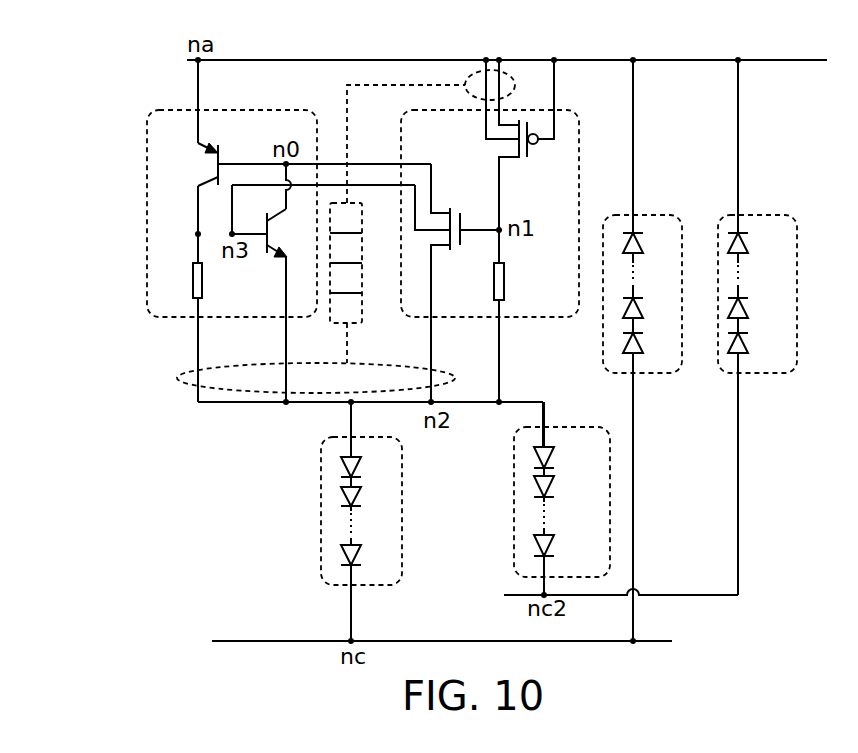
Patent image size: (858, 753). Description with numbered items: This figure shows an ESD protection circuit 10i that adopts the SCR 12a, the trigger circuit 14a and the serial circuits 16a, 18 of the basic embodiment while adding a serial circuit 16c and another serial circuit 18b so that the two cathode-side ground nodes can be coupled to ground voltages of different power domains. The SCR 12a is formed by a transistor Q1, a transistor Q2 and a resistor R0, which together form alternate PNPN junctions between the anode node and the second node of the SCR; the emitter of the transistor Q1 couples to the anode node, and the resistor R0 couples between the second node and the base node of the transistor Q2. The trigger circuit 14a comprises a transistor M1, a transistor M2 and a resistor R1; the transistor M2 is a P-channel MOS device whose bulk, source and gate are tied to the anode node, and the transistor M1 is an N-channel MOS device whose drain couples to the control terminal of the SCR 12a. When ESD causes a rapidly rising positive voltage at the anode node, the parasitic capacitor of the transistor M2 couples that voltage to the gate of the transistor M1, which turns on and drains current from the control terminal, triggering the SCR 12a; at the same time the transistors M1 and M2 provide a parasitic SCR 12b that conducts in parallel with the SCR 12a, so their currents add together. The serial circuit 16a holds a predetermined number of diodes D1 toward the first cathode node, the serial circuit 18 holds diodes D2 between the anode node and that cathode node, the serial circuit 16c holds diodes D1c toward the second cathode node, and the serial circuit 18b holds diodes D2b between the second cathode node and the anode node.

The ESD protection circuit 10i is at (118, 110).
The SCR 12a is at (147, 168).
The parasitic SCR 12b is at (360, 325).
The trigger circuit 14a is at (523, 318).
The serial circuit 16a is at (321, 507).
The serial circuit 16c is at (514, 497).
The serial circuit 18 is at (653, 375).
The serial circuit 18b is at (758, 375).
The transistor Q1 is at (303, 147).
The transistor Q2 is at (272, 283).
The resistor R0 is at (181, 318).
The resistor R1 is at (515, 316).
The transistor M1 is at (457, 283).
The transistor M2 is at (528, 145).
The diode D1 is at (368, 521).
The diode D1c is at (567, 498).
The diode D2 is at (649, 350).
The diode D2b is at (761, 327).